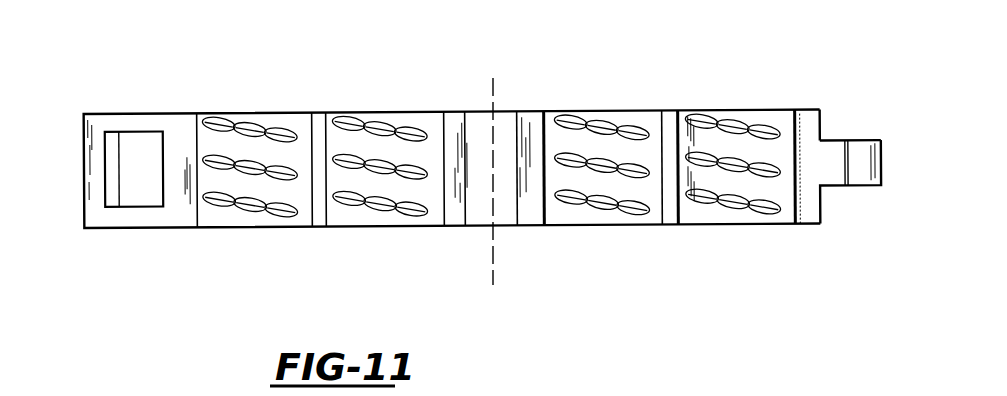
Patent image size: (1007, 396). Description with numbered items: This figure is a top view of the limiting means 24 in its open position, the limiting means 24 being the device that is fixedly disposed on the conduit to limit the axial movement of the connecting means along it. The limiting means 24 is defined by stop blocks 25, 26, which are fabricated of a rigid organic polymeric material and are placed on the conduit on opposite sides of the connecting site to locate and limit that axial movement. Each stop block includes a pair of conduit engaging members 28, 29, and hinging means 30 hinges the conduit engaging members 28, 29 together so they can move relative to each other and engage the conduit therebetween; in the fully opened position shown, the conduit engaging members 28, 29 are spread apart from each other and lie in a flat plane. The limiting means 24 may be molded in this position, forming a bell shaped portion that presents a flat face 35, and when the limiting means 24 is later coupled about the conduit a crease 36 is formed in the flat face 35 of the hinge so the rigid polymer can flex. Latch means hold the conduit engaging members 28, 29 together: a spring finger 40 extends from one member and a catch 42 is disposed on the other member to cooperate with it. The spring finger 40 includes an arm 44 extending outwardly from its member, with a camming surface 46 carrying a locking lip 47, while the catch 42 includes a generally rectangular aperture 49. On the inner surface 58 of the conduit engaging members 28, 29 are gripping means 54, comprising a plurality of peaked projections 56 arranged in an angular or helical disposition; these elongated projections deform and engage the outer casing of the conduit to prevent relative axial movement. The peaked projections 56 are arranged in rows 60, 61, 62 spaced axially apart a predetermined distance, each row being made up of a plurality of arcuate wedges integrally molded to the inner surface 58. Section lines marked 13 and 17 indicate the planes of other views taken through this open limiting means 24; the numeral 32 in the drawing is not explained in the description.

The section line 13- 13 is at (77, 165).
The section line 17- 17 is at (249, 102).
The limiting means 24 is at (634, 95).
The stop block 25 is at (657, 202).
The stop block 26 is at (657, 227).
The conduit engaging member 28 is at (409, 217).
The conduit engaging member 29 is at (238, 230).
The hinging means 30 is at (452, 142).
The housing wall 32 is at (512, 108).
The flat face 35 is at (478, 203).
The crease 36 is at (493, 190).
The spring finger 40 is at (835, 188).
The catch 42 is at (137, 131).
The arm 44 is at (835, 140).
The camming surface 46 is at (877, 177).
The locking lip 47 is at (848, 149).
The aperture 49 is at (142, 183).
The gripping means 54 is at (730, 123).
The peaked projections 56 is at (770, 208).
The inner surface 58 is at (357, 220).
The row 60 is at (762, 130).
The row 61 is at (768, 172).
The row 62 is at (752, 206).